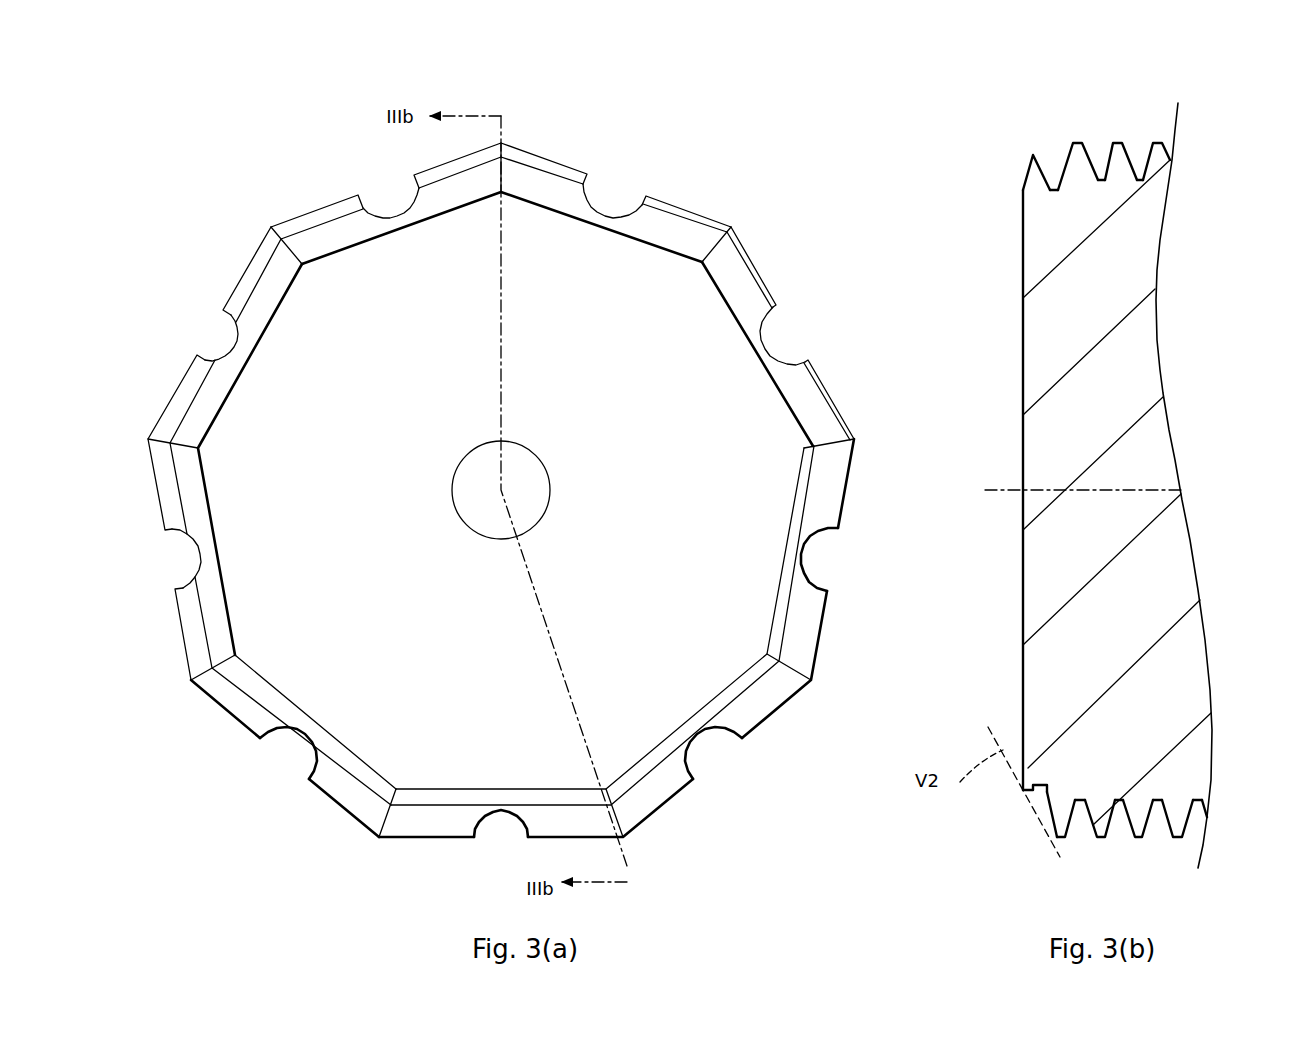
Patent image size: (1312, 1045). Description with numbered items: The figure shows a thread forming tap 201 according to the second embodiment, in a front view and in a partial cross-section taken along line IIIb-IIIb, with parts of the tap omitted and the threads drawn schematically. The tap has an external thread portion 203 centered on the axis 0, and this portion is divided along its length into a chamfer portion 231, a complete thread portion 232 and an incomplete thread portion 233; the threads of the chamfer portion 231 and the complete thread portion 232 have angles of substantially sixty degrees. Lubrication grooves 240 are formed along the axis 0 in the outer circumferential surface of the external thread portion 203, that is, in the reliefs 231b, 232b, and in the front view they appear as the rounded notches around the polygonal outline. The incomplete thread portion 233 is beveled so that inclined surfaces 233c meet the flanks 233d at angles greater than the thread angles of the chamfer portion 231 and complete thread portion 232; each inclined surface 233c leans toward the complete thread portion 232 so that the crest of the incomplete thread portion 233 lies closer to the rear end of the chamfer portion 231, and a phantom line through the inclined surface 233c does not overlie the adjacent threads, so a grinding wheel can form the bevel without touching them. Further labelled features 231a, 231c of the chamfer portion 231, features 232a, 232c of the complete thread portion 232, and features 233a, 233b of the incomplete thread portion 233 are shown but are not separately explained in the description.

In FIG. 3A, the thread forming tap 201 is at (805, 157).
In FIG. 3B, the thread forming tap 201 is at (1221, 158).
In FIG. 3A, the external thread portion 203 is at (777, 220).
In FIG. 3B, the external thread portion 203 is at (1180, 210).
In FIG. 3A, the chamfer portion 231 is at (460, 437).
In FIG. 3B, the chamfer portion 231 is at (1005, 161).
In FIG. 3A, the first side face 231a is at (322, 216).
In FIG. 3B, the first side face 231a is at (1034, 154).
In FIG. 3A, the relief 231b is at (418, 168).
In FIG. 3A, the first side inner edge 231c is at (443, 212).
In FIG. 3B, the first side inner edge 231c is at (1022, 191).
In FIG. 3A, the complete thread portion 232 is at (231, 532).
In FIG. 3B, the complete thread portion 232 is at (1122, 501).
In FIG. 3A, the second side face 232a is at (152, 432).
In FIG. 3B, the second side face 232a is at (1076, 142).
In FIG. 3A, the relief 232b is at (240, 300).
In FIG. 3A, the second side inner edge 232c is at (265, 330).
In FIG. 3B, the second side inner edge 232c is at (1098, 181).
In FIG. 3A, the incomplete thread portion 233 is at (675, 575).
In FIG. 3B, the incomplete thread portion 233 is at (990, 799).
In FIG. 3A, the third side face 233a is at (813, 446).
In FIG. 3B, the third side face 233a is at (1045, 800).
In FIG. 3A, the third side edge 233b is at (820, 495).
In FIG. 3A, the inclined surface 233c is at (853, 497).
In FIG. 3B, the inclined surface 233c is at (1030, 796).
In FIG. 3B, the flank 233d is at (1033, 787).
In FIG. 3A, the lubrication groove 240 is at (393, 212).
In FIG. 3A, the axis 0 is at (503, 489).
In FIG. 3B, the axis 0 is at (985, 495).